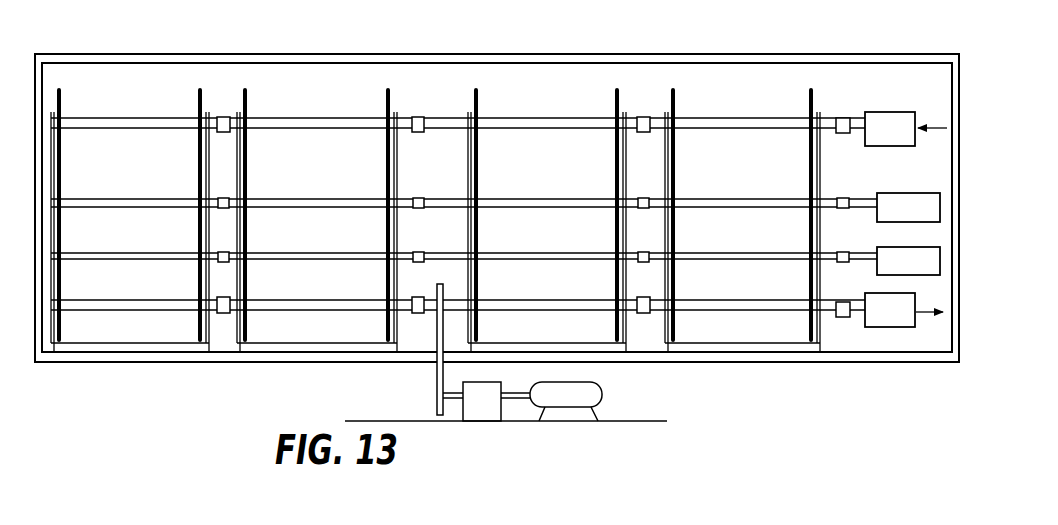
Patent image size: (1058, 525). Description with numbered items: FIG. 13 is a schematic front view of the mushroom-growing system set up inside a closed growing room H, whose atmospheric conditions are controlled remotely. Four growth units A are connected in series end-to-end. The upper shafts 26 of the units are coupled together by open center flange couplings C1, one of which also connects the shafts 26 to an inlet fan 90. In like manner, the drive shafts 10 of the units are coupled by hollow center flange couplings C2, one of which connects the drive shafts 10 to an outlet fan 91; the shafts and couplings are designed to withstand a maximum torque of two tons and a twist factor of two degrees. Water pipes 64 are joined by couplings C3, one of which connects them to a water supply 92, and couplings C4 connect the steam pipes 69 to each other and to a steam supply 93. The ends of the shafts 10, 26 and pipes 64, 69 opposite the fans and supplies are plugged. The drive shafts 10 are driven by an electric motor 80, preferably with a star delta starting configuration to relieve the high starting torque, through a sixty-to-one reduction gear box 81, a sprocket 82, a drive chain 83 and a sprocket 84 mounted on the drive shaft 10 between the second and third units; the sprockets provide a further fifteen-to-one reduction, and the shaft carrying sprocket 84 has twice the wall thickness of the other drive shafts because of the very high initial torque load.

The closed growing room H is at (84, 57).
The growth unit A is at (66, 92).
The shaft 26 is at (128, 118).
The water pipe 64 is at (116, 199).
The steam pipe 69 is at (126, 253).
The drive shaft 10 is at (126, 300).
The open center flange coupling C1 is at (223, 116).
The coupling C3 is at (223, 197).
The coupling C4 is at (223, 251).
The hollow center flange coupling C2 is at (223, 296).
The inlet fan 90 is at (900, 112).
The water supply 92 is at (933, 193).
The steam supply 93 is at (926, 247).
The outlet fan 91 is at (915, 304).
The sprocket 84 is at (437, 320).
The drive chain 83 is at (437, 367).
The sprocket 82 is at (437, 403).
The reduction gear box 81 is at (487, 410).
The electric motor 80 is at (600, 398).